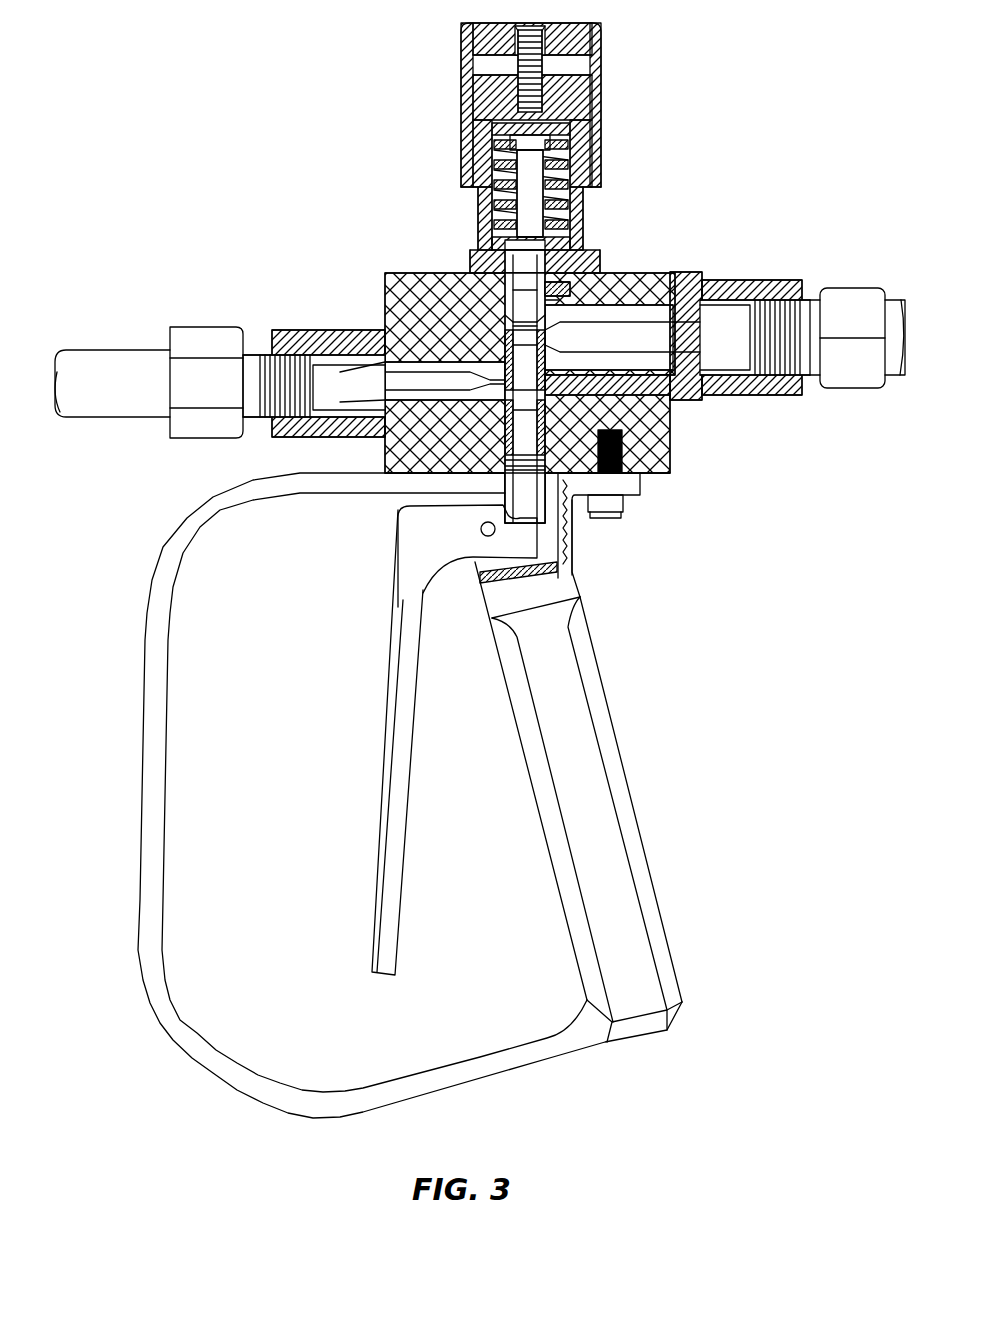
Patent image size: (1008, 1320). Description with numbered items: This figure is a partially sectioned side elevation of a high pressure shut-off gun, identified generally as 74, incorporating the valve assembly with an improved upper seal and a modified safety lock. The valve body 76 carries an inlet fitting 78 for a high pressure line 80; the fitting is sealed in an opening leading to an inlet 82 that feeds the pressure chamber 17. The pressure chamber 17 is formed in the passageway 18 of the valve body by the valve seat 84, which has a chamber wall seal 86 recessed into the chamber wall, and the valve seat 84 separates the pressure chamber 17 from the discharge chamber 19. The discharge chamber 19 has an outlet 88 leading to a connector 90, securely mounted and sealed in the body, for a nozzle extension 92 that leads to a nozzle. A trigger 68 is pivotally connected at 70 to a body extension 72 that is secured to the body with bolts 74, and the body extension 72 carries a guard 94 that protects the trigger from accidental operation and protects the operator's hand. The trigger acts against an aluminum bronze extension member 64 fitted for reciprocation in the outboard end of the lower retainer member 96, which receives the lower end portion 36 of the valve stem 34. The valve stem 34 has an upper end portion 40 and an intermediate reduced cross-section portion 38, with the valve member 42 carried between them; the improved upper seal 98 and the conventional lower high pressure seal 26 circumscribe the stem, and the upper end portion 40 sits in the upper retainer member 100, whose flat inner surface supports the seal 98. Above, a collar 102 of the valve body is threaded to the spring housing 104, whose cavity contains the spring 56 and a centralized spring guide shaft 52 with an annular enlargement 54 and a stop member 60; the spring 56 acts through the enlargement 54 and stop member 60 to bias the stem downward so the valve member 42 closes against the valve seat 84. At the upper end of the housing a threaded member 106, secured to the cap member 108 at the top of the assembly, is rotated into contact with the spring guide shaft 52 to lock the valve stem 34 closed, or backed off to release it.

The pressure chamber 17 is at (500, 300).
The passageway 18 is at (500, 395).
The discharge chamber 19 is at (672, 455).
The lower high pressure seal 26 is at (655, 480).
The valve stem 34 is at (545, 320).
The lower end portion 36 is at (415, 502).
The intermediate reduced cross-section portion 38 is at (440, 430).
The upper end portion 40 is at (548, 330).
The valve member 42 is at (705, 338).
The spring guide shaft 52 is at (543, 170).
The annular enlargement 54 is at (488, 205).
The spring 56 is at (492, 160).
The stop member 60 is at (492, 240).
The extension member 64 is at (525, 500).
The trigger 68 is at (388, 795).
The pivot 70 is at (481, 529).
The body extension 72 is at (640, 785).
The bolts 74 is at (605, 520).
The valve body 76 is at (648, 500).
The inlet fitting 78 is at (750, 280).
The high pressure line 80 is at (885, 300).
The inlet 82 is at (560, 285).
The valve seat 84 is at (672, 430).
The chamber wall seal 86 is at (670, 405).
The outlet 88 is at (440, 350).
The connector 90 is at (330, 330).
The nozzle extension 92 is at (170, 350).
The guard 94 is at (165, 800).
The lower retainer member 96 is at (490, 458).
The upper seal 98 is at (478, 262).
The upper retainer member 100 is at (520, 262).
The collar 102 is at (583, 230).
The spring housing 104 is at (600, 118).
The threaded member 106 is at (585, 95).
The adjusting screw head 108 is at (600, 45).